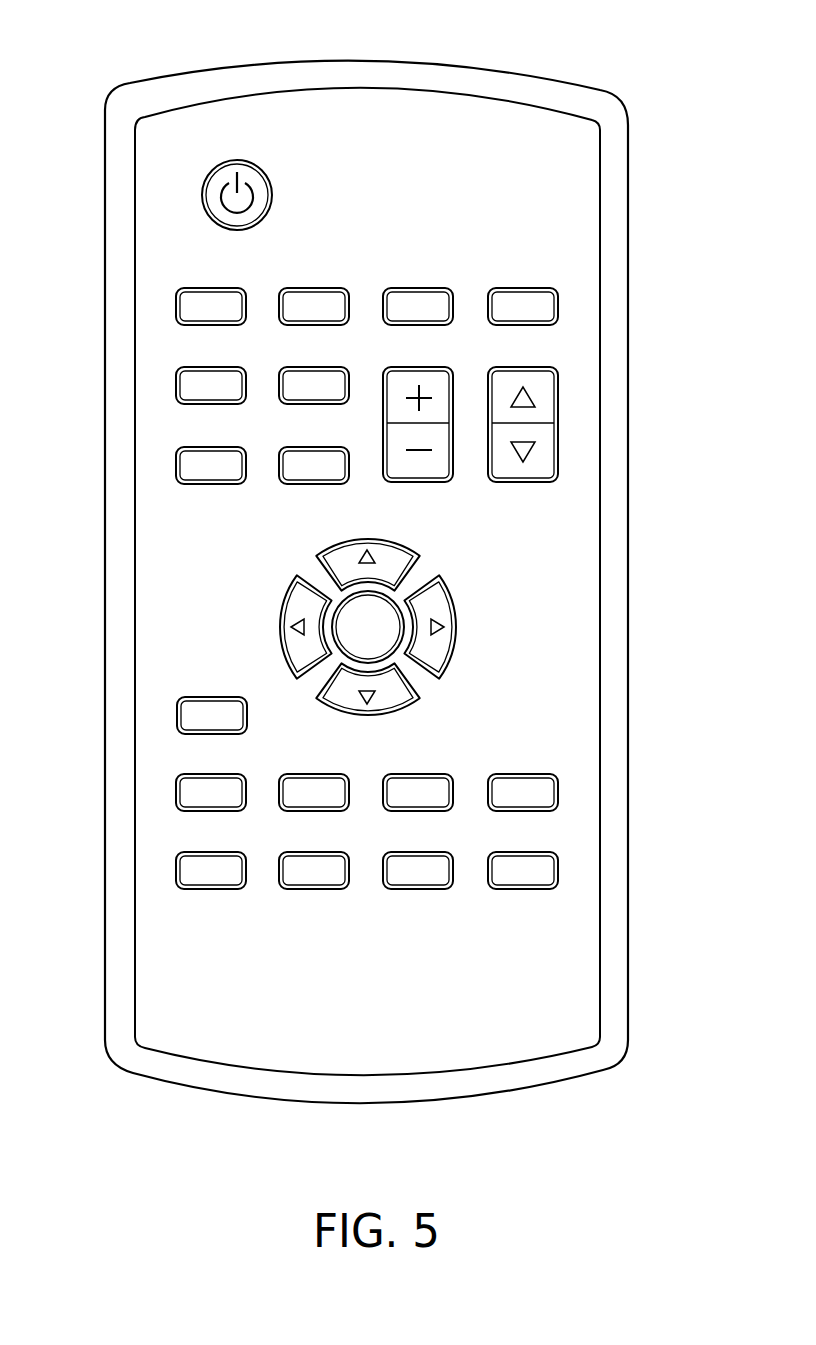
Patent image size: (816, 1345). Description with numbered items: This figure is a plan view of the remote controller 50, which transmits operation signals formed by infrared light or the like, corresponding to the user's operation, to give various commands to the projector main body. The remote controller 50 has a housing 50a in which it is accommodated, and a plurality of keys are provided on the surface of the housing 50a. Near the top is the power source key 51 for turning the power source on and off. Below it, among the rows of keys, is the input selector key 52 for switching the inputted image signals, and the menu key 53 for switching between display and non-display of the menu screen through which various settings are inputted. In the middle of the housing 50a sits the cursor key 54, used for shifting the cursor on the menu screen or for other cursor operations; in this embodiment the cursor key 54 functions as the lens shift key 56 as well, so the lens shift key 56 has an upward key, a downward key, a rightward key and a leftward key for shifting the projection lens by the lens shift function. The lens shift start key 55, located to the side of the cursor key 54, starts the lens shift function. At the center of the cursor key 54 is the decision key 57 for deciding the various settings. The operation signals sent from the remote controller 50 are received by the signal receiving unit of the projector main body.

The remote controller 50 is at (377, 552).
The housing 50a is at (618, 212).
The power source key 51 is at (262, 192).
The input selector key 52 is at (211, 463).
The menu key 53 is at (543, 303).
The cursor key 54 is at (402, 640).
The lens shift key 56 is at (400, 558).
The lens shift start key 55 is at (193, 712).
The decision key 57 is at (378, 647).